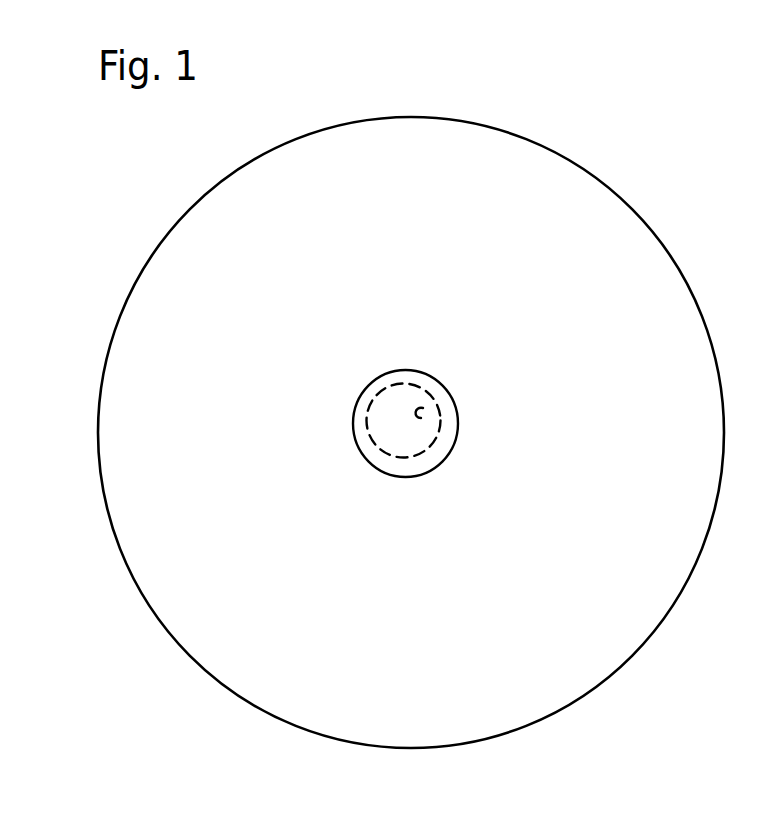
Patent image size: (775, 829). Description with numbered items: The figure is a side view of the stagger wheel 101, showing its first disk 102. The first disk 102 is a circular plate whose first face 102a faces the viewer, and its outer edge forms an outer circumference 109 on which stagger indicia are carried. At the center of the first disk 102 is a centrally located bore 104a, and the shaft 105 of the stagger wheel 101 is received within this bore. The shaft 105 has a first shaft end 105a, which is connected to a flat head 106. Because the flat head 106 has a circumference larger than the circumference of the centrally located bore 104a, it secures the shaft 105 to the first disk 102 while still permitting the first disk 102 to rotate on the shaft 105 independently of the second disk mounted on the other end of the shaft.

The stagger wheel 101 is at (283, 105).
The first disk 102 is at (578, 217).
The first face 102a is at (598, 266).
The centrally located bore 104a is at (397, 458).
The shaft 105 is at (402, 403).
The first shaft end 105a is at (425, 419).
The flat head 106 is at (442, 468).
The outer circumference 109 is at (602, 675).